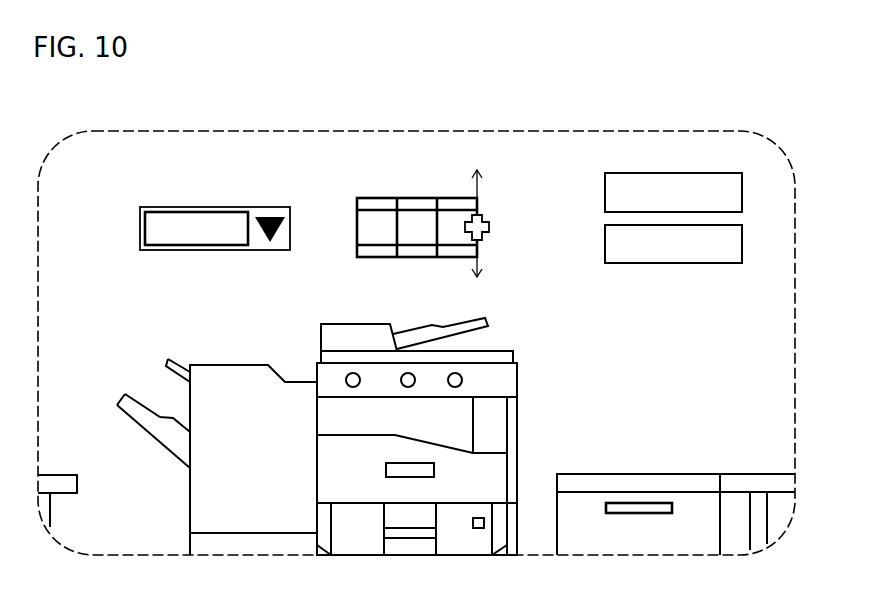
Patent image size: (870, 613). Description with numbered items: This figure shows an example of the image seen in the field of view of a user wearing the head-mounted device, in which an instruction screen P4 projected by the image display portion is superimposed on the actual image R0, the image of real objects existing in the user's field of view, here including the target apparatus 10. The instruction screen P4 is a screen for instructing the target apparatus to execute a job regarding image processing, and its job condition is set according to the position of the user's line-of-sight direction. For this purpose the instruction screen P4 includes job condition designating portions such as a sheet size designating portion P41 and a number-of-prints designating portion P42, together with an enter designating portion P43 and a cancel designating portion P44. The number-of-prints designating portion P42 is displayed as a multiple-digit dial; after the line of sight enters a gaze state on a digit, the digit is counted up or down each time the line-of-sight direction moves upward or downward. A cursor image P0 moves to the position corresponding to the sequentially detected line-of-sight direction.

The instruction screen P4 is at (94, 180).
The actual image R0 is at (773, 340).
The sheet size designating portion P41 is at (157, 252).
The number-of-prints designating portion P42 is at (388, 258).
The enter designating portion P43 is at (660, 172).
The cancel designating portion P44 is at (655, 265).
The cursor image P0 is at (490, 225).
The image forming apparatus 10 is at (252, 335).